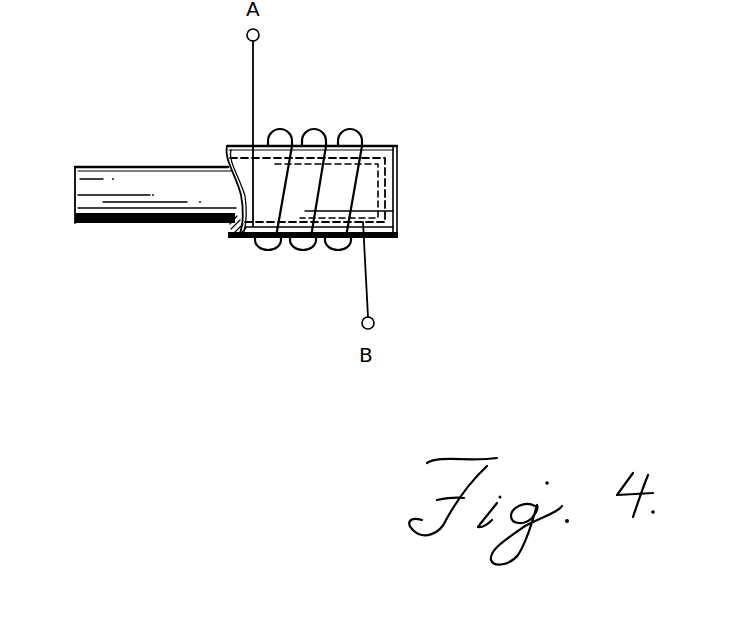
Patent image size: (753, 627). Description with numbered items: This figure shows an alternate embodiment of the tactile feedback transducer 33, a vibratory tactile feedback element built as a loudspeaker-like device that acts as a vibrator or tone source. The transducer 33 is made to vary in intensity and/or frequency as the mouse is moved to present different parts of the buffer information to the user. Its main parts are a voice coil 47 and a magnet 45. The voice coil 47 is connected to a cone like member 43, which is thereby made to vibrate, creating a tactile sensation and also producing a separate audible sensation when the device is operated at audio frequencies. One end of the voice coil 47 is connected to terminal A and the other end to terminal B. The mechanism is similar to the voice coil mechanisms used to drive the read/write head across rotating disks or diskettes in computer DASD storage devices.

The tactile feedback transducer 33 is at (402, 124).
The cone like member 43 is at (398, 214).
The magnet 45 is at (150, 224).
The voice coil 47 is at (316, 134).